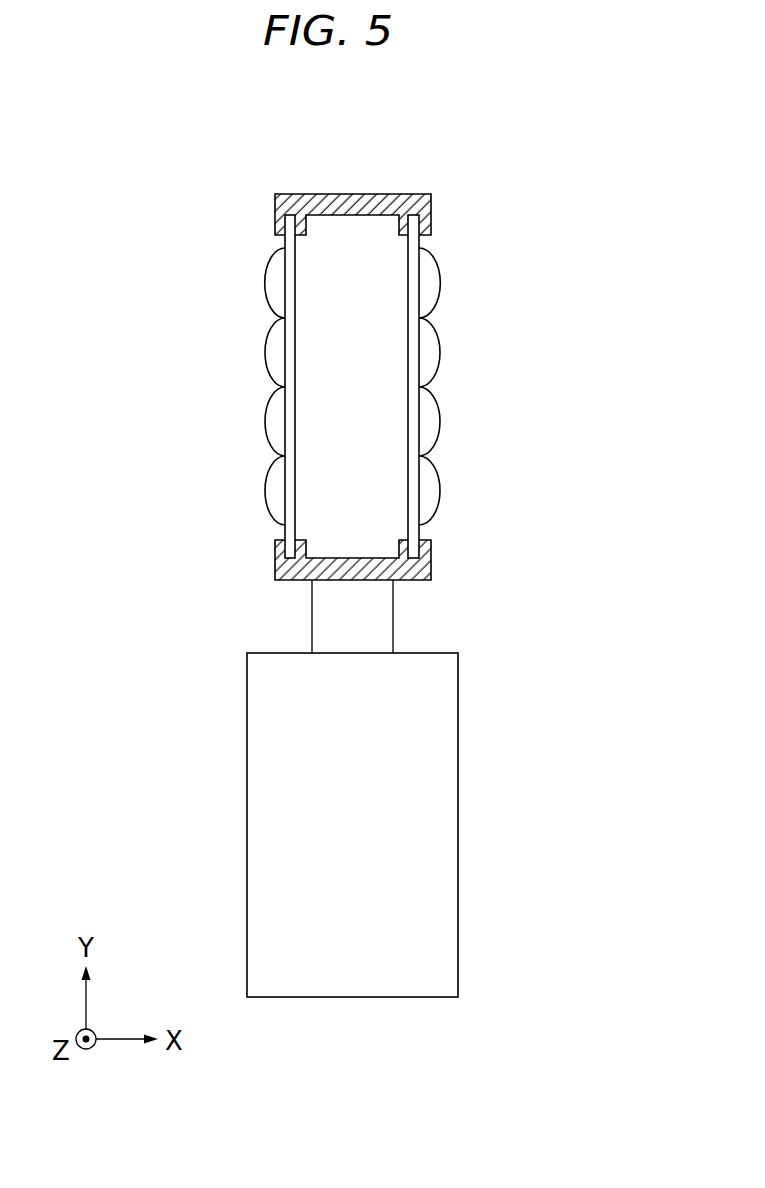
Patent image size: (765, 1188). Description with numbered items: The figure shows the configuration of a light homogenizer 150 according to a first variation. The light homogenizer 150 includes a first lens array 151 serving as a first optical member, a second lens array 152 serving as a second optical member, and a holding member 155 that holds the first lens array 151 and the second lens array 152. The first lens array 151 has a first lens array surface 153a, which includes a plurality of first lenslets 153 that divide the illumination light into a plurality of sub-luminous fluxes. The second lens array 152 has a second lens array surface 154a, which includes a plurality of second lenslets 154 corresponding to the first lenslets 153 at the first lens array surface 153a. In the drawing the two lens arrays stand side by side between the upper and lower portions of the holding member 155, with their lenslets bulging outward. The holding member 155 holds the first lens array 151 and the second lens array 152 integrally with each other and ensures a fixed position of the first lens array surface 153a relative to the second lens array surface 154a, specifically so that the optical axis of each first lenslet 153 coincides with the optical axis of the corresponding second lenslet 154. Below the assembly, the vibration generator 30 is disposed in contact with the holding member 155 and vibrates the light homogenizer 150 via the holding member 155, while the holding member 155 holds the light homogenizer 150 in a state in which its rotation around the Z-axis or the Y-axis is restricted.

The light homogenizer 150 is at (437, 150).
The holding member 155 is at (352, 196).
The first lens array 151 is at (252, 276).
The second lens array 152 is at (455, 276).
The first lenslets 153 is at (268, 421).
The second lenslets 154 is at (442, 421).
The first lens array surface 153a is at (268, 491).
The second lens array surface 154a is at (442, 491).
The vibration generator 30 is at (473, 832).